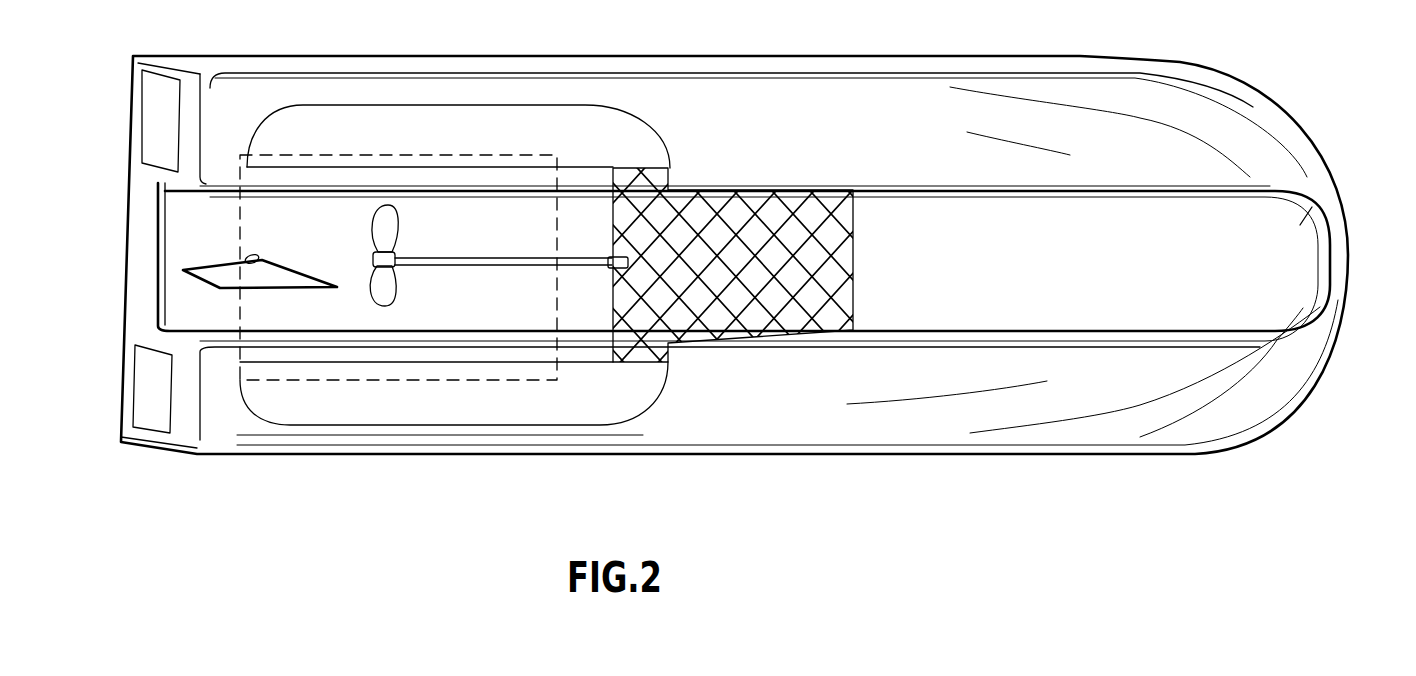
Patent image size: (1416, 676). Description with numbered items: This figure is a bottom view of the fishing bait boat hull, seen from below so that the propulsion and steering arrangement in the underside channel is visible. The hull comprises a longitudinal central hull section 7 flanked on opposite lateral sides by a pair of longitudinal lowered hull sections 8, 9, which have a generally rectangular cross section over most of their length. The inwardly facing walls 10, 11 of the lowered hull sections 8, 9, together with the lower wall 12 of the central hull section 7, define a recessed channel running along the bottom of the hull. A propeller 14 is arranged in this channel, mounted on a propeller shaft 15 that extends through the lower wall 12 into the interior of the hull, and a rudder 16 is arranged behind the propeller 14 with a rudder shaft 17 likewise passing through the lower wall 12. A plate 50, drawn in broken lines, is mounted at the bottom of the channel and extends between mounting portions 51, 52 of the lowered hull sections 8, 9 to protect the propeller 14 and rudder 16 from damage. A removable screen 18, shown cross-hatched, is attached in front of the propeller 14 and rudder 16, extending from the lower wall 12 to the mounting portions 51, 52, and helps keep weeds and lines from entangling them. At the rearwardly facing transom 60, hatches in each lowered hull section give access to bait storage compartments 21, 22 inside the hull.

The central hull section 7 is at (138, 290).
The lowered hull section 8 is at (312, 445).
The lowered hull section 9 is at (308, 88).
The inwardly facing wall 10 is at (988, 343).
The inwardly facing wall 11 is at (1032, 193).
The lower wall 12 is at (1300, 222).
The propeller 14 is at (398, 232).
The propeller shaft 15 is at (486, 268).
The rudder 16 is at (258, 280).
The rudder shaft 17 is at (253, 257).
The removable screen 18 is at (788, 200).
The bait storage compartment 21 is at (150, 387).
The bait storage compartment 22 is at (153, 118).
The plate 50 is at (412, 155).
The mounting portion 51 is at (632, 405).
The mounting portion 52 is at (633, 125).
The transom 60 is at (145, 208).